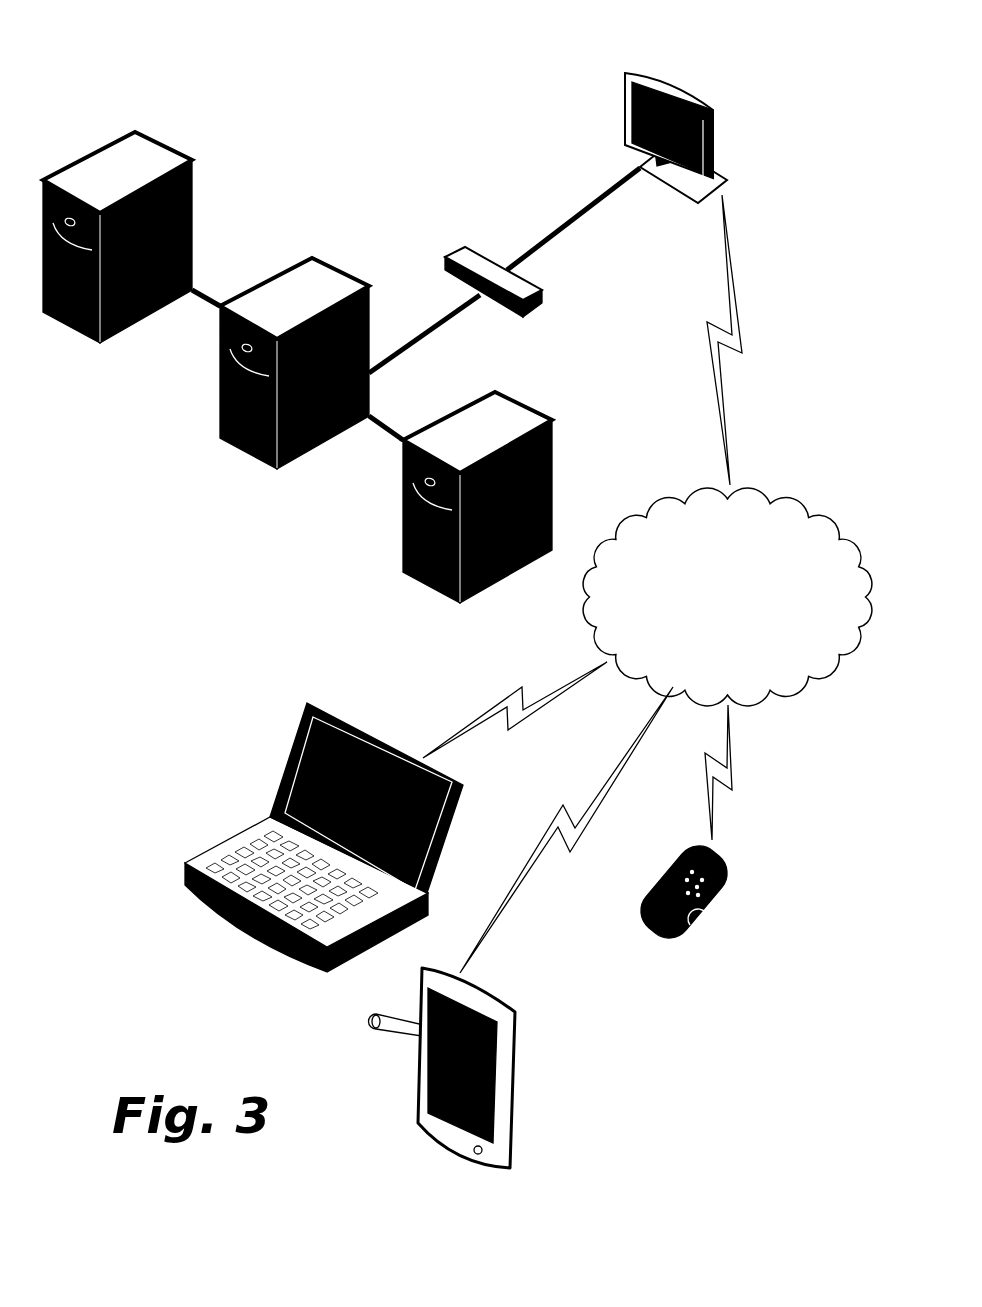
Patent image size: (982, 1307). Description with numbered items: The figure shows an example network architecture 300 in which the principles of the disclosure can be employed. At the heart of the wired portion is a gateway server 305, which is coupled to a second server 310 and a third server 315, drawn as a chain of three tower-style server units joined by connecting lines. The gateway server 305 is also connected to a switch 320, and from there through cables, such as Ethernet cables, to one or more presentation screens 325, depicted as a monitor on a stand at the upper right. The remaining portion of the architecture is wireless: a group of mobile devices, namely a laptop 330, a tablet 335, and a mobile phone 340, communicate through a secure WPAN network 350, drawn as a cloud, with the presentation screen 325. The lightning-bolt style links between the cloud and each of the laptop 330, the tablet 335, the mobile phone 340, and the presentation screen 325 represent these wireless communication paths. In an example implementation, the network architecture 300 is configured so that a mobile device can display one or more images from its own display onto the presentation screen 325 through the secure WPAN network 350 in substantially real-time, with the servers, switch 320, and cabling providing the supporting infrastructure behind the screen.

The network architecture 300 is at (475, 50).
The gateway server 305 is at (313, 258).
The second server 310 is at (140, 132).
The third server 315 is at (497, 392).
The switch 320 is at (465, 247).
The presentation screen 325 is at (638, 72).
The laptop 330 is at (307, 703).
The tablet 335 is at (507, 1003).
The mobile phone 340 is at (637, 907).
The secure WPAN network 350 is at (712, 624).